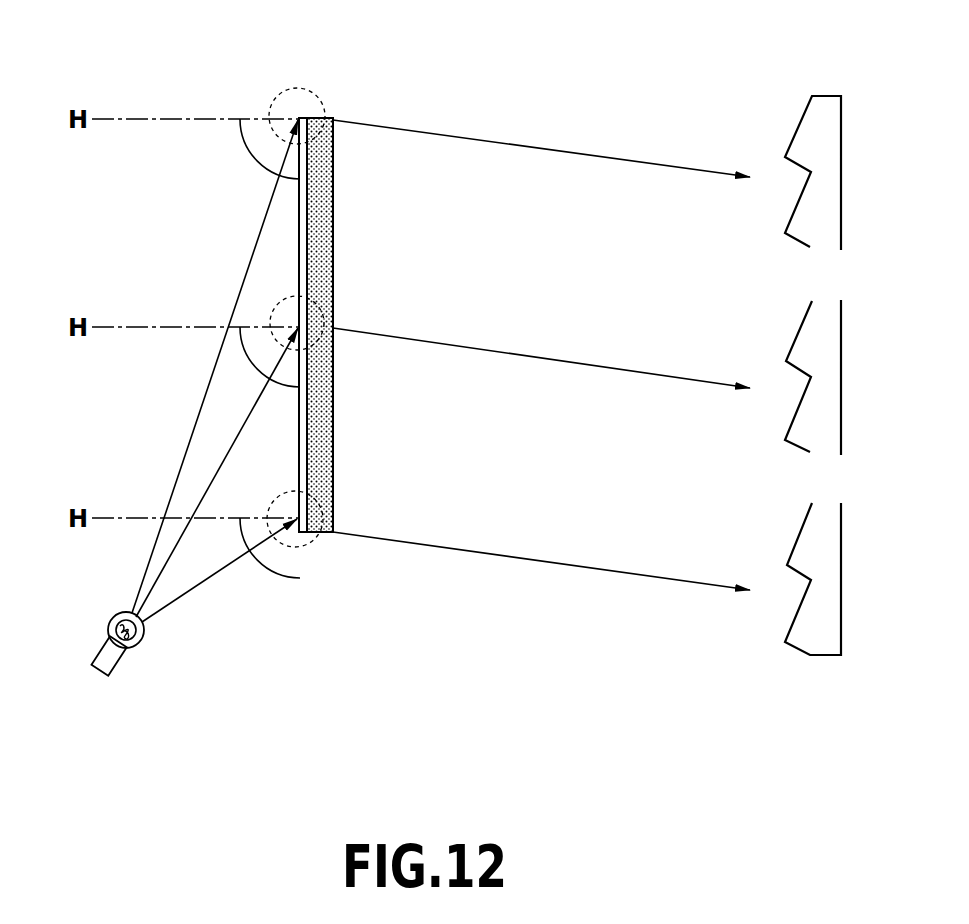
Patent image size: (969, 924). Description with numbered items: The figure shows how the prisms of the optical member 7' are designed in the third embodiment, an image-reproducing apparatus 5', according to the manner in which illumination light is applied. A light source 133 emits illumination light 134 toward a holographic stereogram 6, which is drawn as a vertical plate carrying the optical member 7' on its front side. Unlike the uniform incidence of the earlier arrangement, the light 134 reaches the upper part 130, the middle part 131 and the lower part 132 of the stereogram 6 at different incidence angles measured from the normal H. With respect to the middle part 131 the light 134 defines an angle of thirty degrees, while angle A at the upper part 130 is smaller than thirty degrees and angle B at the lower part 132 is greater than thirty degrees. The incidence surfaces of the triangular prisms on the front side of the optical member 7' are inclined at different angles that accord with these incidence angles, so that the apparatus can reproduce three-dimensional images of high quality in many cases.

The illumination device 5' is at (426, 356).
The holographic stereogram 6 is at (320, 325).
The optical member 7' is at (279, 325).
The upper part 130 is at (318, 96).
The middle part 131 is at (334, 292).
The lower part 132 is at (310, 545).
The light source 133 is at (106, 645).
The illumination light 134 is at (250, 259).